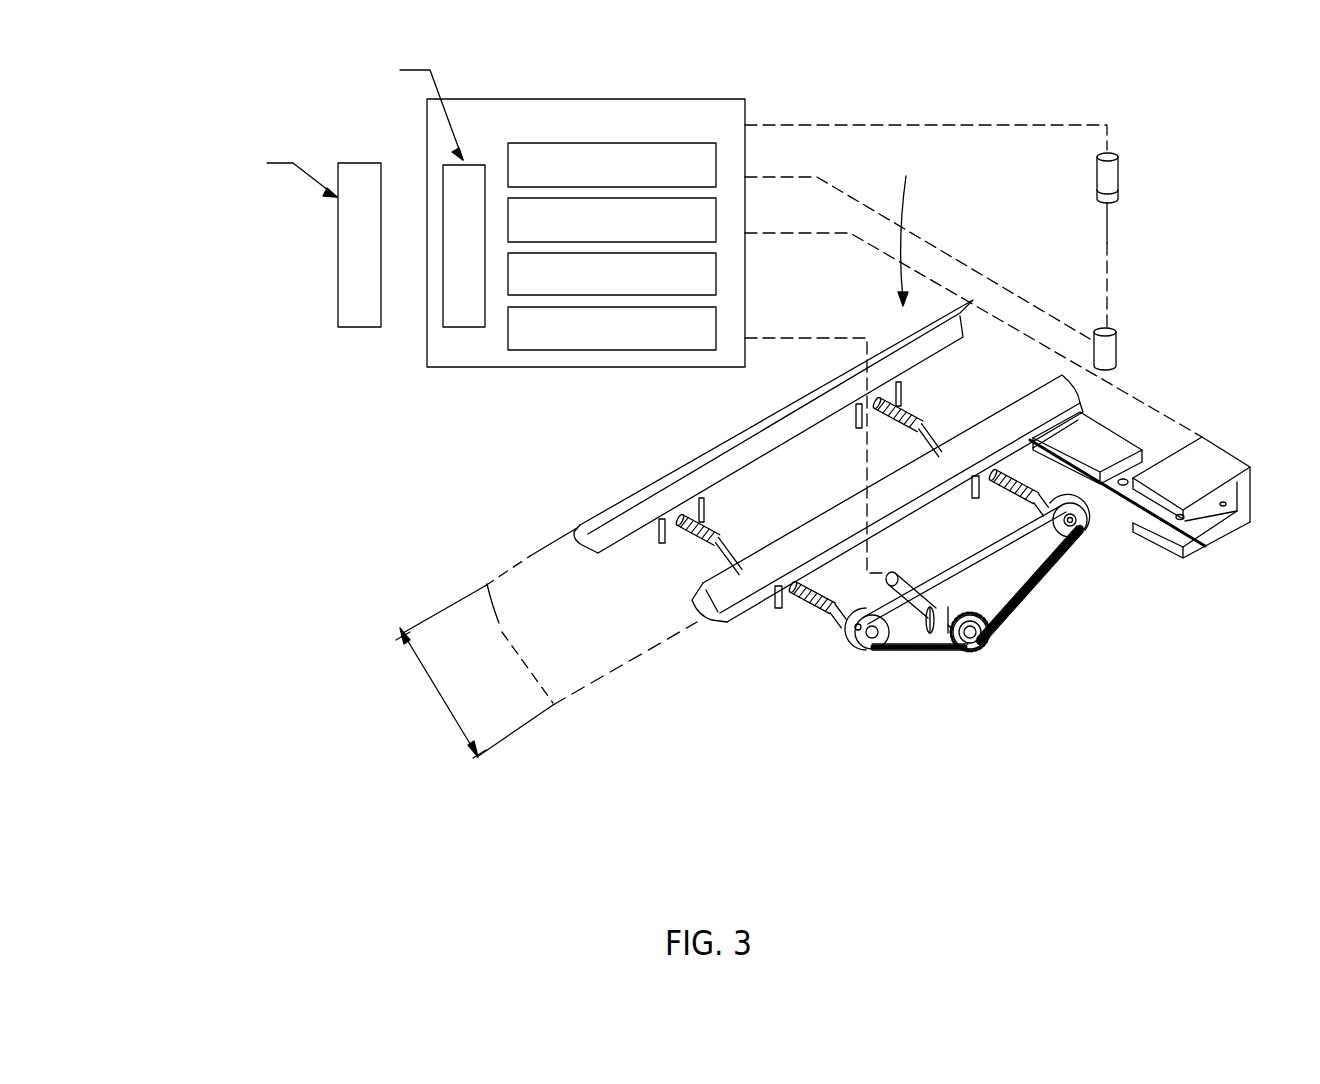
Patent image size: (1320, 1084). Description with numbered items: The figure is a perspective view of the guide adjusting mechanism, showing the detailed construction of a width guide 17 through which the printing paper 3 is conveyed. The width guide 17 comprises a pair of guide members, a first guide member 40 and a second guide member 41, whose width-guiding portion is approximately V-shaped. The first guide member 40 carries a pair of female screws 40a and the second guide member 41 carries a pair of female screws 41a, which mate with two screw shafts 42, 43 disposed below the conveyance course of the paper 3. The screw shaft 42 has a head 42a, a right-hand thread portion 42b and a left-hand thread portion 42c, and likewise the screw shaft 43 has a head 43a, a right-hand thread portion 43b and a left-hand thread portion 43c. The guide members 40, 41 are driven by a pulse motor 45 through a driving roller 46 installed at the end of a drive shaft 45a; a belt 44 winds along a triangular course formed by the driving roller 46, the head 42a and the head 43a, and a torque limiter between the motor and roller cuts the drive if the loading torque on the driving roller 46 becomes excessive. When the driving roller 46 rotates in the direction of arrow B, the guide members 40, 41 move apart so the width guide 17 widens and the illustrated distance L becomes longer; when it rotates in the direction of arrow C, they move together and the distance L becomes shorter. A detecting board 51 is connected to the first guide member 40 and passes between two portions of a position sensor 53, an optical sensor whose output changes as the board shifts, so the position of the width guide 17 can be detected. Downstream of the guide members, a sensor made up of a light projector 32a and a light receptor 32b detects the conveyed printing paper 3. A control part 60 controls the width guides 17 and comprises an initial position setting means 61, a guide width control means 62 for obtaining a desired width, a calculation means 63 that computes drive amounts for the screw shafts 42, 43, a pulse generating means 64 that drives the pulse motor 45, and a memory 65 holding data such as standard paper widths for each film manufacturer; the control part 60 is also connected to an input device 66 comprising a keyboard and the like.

The printing paper 3 is at (535, 553).
The width guide 17 is at (910, 228).
The light projector 32a is at (1118, 170).
The light receptor 32b is at (1116, 348).
The first guide member 40 is at (735, 607).
The female screws 40a is at (787, 603).
The second guide member 41 is at (672, 470).
The female screws 41a is at (850, 424).
The screw shaft 42 is at (866, 656).
The head 42a is at (853, 653).
The right-hand thread portion 42b is at (838, 625).
The left-hand thread portion 42c is at (712, 530).
The screw shaft 43 is at (1065, 543).
The head 43a is at (1083, 507).
The right-hand thread portion 43b is at (1010, 465).
The left-hand thread portion 43c is at (873, 427).
The belt 44 is at (1038, 580).
The pulse motor 45 is at (895, 570).
The drive shaft 45a is at (977, 654).
The driving roller 46 is at (990, 640).
The detecting board 51 is at (1220, 532).
The position sensor 53 is at (1225, 460).
The control part 60 is at (520, 367).
The initial position setting means 61 is at (716, 182).
The guide width control means 62 is at (716, 237).
The calculation means 63 is at (716, 290).
The pulse generating means 64 is at (716, 344).
The memory 65 is at (455, 327).
The input device 66 is at (350, 327).
The arrow B is at (940, 607).
The arrow C is at (963, 613).
The distance L is at (441, 693).